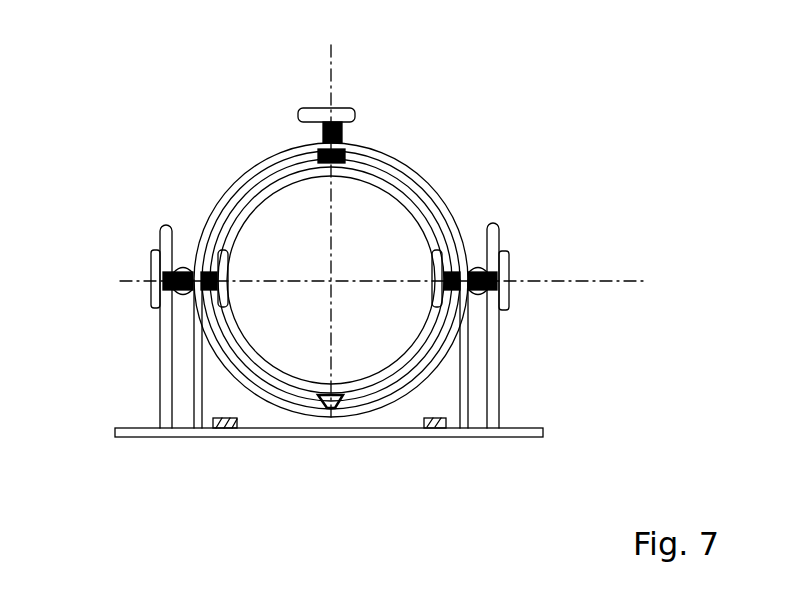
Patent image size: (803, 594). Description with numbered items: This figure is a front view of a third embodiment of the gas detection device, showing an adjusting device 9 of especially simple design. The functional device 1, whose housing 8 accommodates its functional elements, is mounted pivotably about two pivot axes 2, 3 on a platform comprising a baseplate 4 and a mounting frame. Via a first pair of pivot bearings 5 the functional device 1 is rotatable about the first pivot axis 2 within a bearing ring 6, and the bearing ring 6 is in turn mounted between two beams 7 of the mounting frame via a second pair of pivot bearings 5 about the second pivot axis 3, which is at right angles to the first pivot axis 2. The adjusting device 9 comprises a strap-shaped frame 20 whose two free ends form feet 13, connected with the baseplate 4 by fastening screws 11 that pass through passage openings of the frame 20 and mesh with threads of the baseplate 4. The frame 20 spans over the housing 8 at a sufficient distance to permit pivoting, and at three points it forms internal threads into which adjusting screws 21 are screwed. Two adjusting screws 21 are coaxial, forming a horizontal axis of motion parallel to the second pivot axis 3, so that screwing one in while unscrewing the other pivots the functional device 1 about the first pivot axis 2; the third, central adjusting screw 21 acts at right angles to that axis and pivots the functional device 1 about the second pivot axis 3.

The functional device 1 is at (366, 219).
The first pivot axis 2 is at (327, 50).
The second pivot axis 3 is at (601, 279).
The baseplate 4 is at (518, 432).
The pivot bearings 5 is at (328, 152).
The bearing ring 6 is at (240, 380).
The beams 7 is at (197, 240).
The housing 8 is at (213, 312).
The adjusting device 9 is at (452, 173).
The fastening screws 11 is at (423, 420).
The feet 13 is at (216, 434).
The strap-shaped frame 20 is at (217, 203).
The adjusting screws 21 is at (330, 112).